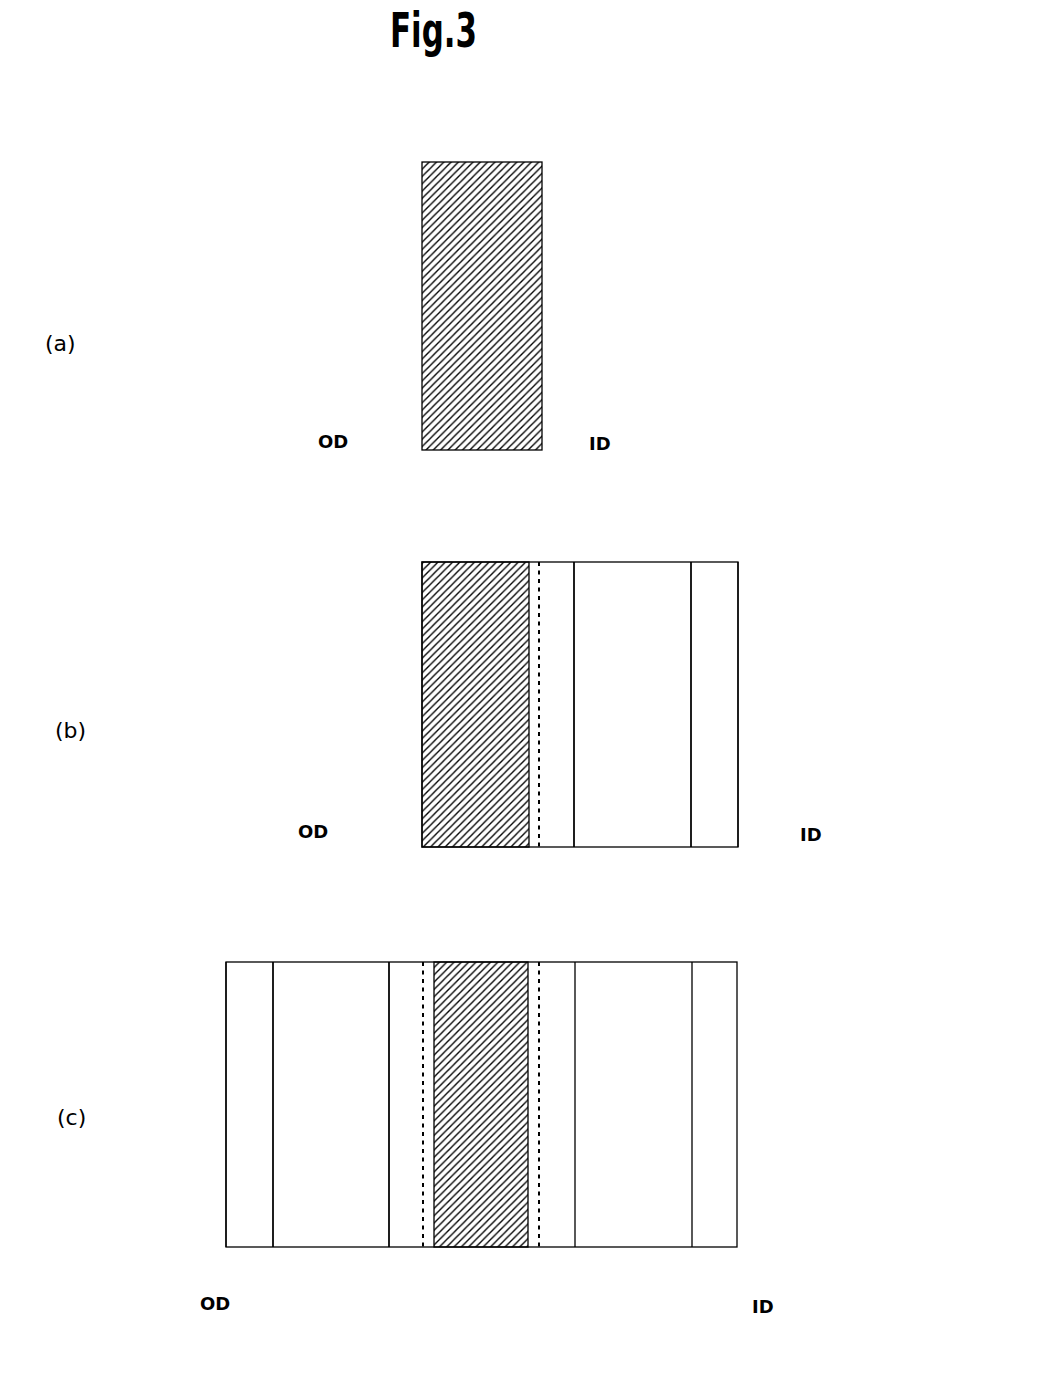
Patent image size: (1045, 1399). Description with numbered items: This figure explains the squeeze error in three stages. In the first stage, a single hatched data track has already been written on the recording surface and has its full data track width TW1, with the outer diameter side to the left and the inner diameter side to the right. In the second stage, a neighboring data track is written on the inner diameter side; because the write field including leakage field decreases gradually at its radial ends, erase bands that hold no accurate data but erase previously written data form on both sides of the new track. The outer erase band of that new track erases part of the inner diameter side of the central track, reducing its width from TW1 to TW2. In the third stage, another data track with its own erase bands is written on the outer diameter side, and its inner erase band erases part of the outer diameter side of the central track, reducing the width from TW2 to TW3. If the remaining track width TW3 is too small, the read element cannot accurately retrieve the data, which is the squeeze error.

The data track width TW1 is at (540, 152).
The track width TW2 is at (527, 544).
The track width TW3 is at (526, 943).